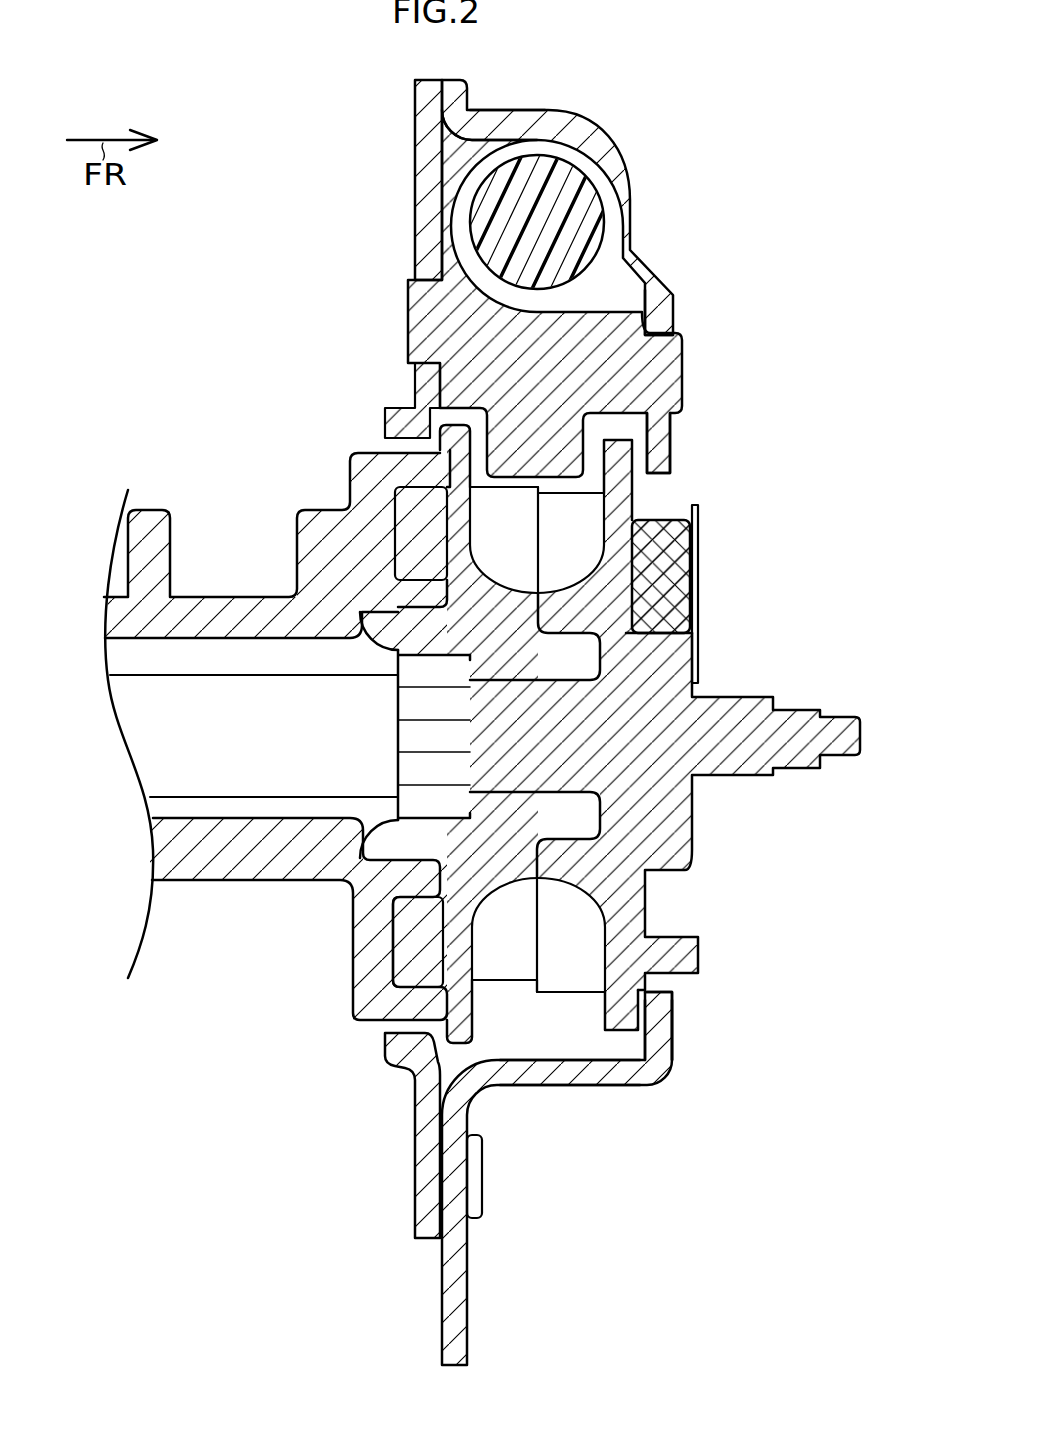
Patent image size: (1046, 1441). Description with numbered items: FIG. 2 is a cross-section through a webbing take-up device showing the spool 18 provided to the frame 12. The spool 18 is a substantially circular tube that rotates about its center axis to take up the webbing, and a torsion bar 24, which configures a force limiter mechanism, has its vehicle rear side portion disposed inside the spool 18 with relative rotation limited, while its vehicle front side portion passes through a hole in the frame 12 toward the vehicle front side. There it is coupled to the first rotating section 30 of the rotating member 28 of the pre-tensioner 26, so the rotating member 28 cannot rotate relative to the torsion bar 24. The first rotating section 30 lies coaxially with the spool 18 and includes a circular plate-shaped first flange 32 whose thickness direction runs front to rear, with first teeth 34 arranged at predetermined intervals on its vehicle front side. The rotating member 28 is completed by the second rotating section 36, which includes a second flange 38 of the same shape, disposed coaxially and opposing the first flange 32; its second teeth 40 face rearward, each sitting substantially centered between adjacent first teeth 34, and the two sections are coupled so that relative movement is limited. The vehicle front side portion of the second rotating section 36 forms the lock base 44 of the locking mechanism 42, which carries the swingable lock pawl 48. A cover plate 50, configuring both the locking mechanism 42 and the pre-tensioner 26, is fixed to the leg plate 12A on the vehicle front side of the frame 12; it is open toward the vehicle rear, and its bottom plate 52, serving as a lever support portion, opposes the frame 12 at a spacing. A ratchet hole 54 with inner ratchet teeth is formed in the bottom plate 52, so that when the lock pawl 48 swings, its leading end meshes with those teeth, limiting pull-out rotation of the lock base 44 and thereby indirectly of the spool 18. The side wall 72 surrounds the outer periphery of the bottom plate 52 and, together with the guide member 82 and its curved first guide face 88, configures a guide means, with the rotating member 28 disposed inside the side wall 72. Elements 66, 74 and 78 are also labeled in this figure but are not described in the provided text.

The frame 12 is at (361, 659).
The leg plate 12A is at (420, 1180).
The spool 18 is at (240, 873).
The torsion bar 24 is at (147, 760).
The pre-tensioner 26 is at (598, 1178).
The rotating member 28 is at (384, 965).
The first rotating section 30 is at (402, 945).
The first flange 32 is at (452, 435).
The first teeth 34 is at (500, 490).
The second rotating section 36 is at (625, 915).
The second flange 38 is at (618, 447).
The second teeth 40 is at (560, 500).
The locking mechanism 42 is at (709, 581).
The lock base 44 is at (633, 490).
The lock pawl 48 is at (680, 555).
The cover plate 50 is at (598, 1178).
The bottom plate 52 is at (662, 1034).
The ratchet hole 54 is at (660, 474).
The O-ring 66 is at (598, 212).
The side wall 72 is at (585, 190).
The bottom wall 74 is at (596, 1150).
The housing flange 78 is at (497, 113).
The guide member 82 is at (576, 585).
The first guide face 88 is at (595, 322).